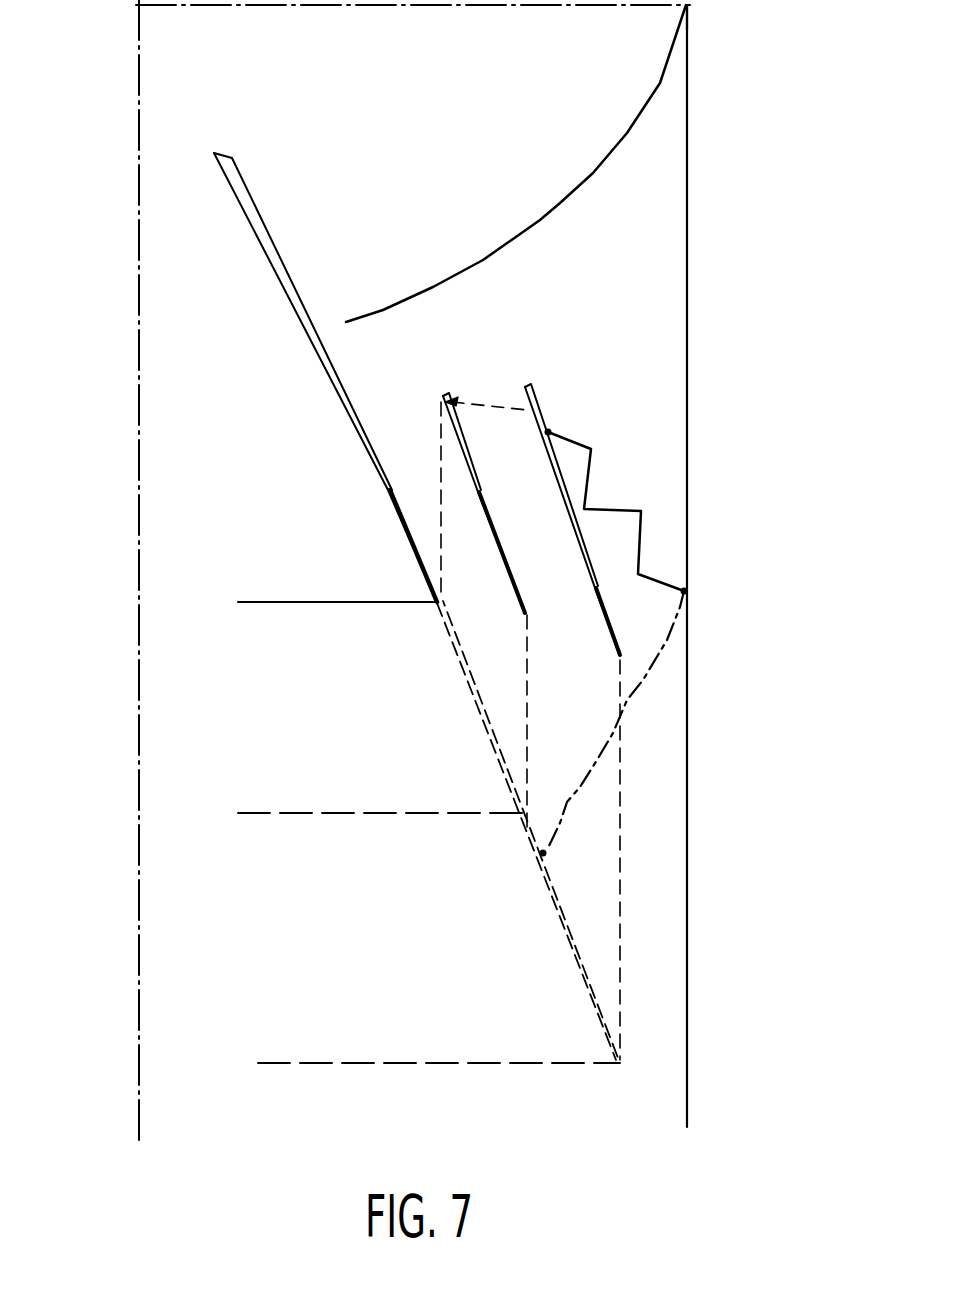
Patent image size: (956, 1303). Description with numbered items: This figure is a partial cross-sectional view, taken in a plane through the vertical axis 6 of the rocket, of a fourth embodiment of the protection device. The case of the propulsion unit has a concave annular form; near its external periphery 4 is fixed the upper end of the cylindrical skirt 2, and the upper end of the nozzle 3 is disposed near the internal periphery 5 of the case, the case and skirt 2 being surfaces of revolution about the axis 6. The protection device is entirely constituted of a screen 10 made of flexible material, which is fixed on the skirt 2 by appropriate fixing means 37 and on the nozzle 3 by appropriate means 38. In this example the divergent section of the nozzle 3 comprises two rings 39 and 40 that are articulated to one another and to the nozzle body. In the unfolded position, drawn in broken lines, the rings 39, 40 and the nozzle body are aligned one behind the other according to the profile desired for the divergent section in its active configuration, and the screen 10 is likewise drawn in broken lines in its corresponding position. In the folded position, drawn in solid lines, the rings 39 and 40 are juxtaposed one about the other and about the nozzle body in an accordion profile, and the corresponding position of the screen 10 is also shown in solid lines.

The skirt 2 is at (689, 237).
The nozzle 3 is at (297, 311).
The external periphery 4 is at (688, 10).
The internal periphery 5 is at (346, 322).
The vertical axis 6 is at (139, 500).
The screen 10 is at (654, 522).
The fixing means 37 is at (688, 590).
The fixing means 38 is at (540, 856).
The ring 39 is at (477, 493).
The ring 40 is at (556, 475).